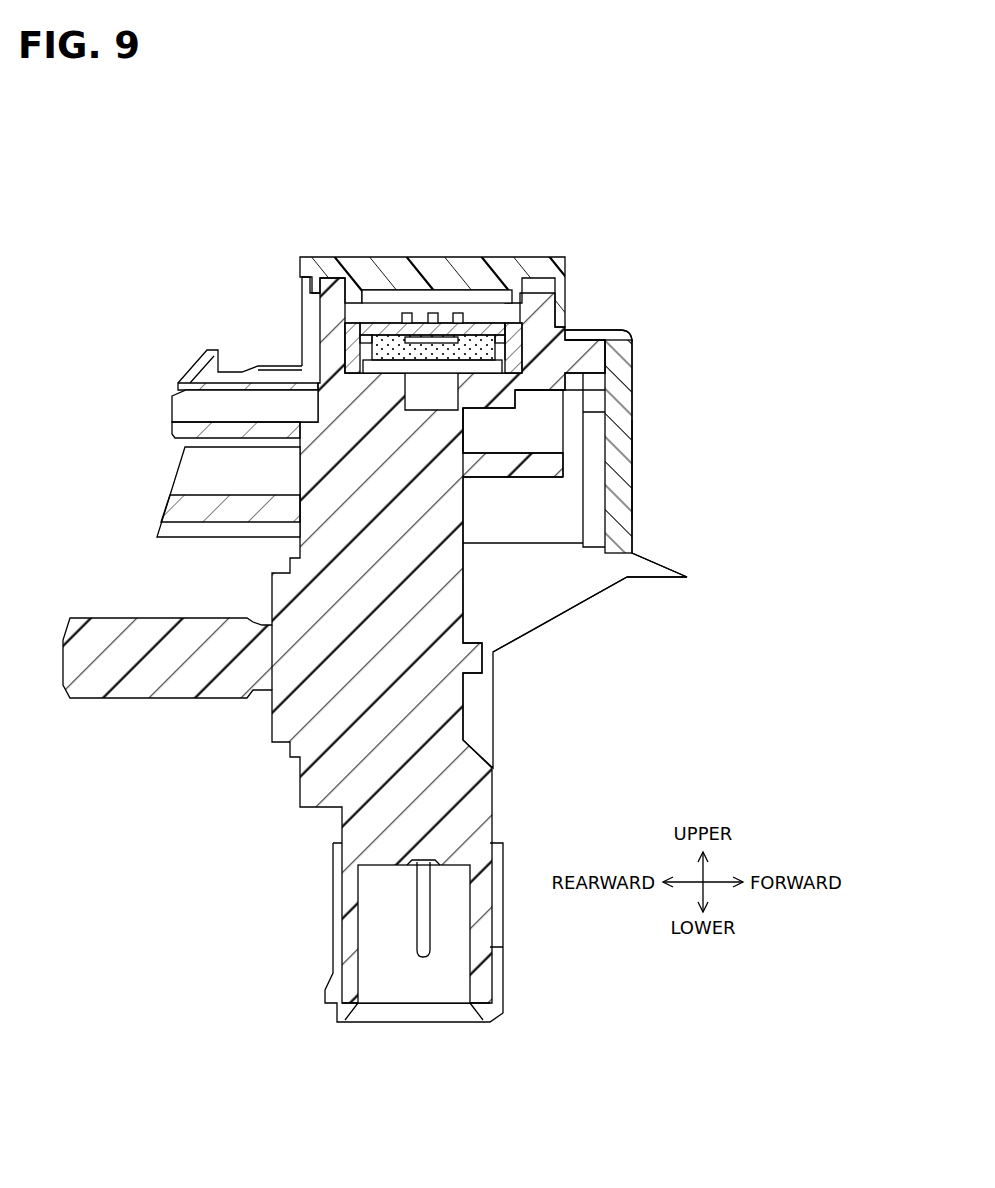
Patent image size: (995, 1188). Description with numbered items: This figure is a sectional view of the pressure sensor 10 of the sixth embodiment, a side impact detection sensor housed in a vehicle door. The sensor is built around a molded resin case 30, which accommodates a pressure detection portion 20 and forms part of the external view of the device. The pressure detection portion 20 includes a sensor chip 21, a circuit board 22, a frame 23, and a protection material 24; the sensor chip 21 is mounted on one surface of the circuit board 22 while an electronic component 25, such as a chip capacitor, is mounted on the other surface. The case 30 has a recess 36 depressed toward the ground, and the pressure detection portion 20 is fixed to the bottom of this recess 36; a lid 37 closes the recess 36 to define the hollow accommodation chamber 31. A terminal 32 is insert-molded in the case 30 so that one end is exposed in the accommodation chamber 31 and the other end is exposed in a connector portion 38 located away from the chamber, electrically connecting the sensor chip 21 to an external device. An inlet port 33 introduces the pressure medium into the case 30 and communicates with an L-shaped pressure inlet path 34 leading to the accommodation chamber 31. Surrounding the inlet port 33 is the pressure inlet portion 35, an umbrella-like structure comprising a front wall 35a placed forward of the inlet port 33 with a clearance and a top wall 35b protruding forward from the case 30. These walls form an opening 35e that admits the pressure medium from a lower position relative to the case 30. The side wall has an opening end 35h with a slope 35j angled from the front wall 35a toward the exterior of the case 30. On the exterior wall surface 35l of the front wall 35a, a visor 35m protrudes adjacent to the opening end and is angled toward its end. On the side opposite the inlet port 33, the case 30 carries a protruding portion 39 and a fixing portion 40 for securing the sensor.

The pressure sensor 10 is at (568, 292).
The pressure detection portion 20 is at (378, 315).
The sensor chip 21 is at (320, 292).
The circuit board 22 is at (468, 338).
The frame 23 is at (360, 347).
The protection material 24 is at (568, 299).
The electronic component 25 is at (425, 322).
The case 30 is at (417, 685).
The accommodation chamber 31 is at (470, 312).
The terminal 32 is at (420, 905).
The inlet port 33 is at (565, 432).
The pressure inlet path 34 is at (517, 485).
The pressure inlet portion 35 is at (640, 365).
The front wall 35a is at (617, 417).
The top wall 35b is at (587, 329).
The opening 35e is at (593, 583).
The opening end 35h is at (560, 610).
The slope 35j is at (543, 622).
The exterior wall surface 35l is at (633, 465).
The visor 35m is at (668, 567).
The recess 36 is at (512, 318).
The lid 37 is at (385, 293).
The connector portion 38 is at (352, 947).
The protruding portion 39 is at (118, 700).
The fixing portion 40 is at (168, 405).